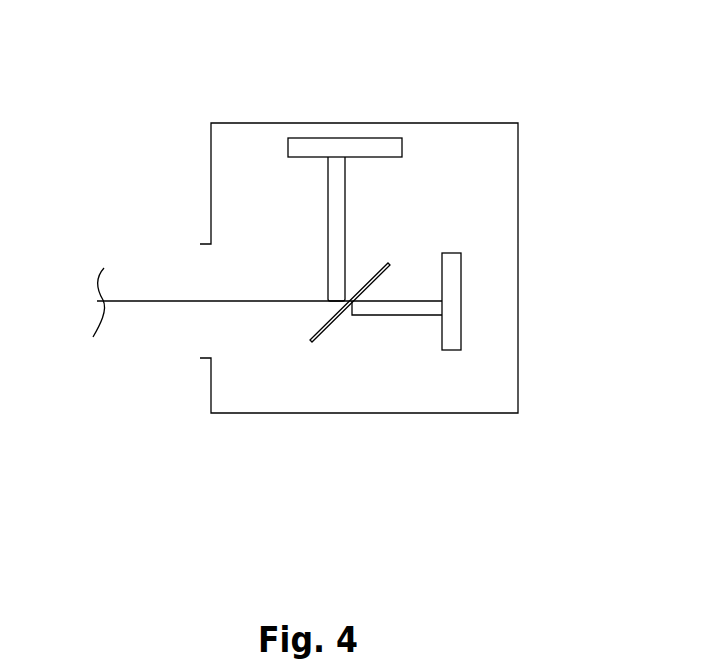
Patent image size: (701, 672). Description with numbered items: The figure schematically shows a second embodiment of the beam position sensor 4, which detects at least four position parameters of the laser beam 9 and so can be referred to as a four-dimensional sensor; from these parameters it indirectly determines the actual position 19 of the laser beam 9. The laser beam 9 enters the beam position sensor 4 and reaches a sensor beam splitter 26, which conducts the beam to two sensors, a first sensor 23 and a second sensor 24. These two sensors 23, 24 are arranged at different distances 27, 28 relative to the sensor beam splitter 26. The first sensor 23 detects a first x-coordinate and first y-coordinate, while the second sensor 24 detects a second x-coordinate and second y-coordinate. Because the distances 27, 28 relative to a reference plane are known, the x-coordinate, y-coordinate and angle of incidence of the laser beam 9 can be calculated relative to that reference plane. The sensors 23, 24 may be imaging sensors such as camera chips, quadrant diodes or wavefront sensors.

The beam position sensor 4 is at (115, 88).
The laser beam 9 is at (86, 318).
The actual position 19 is at (168, 302).
The first sensor 23 is at (448, 326).
The second sensor 24 is at (330, 150).
The sensor beam splitter 26 is at (310, 340).
The first distance 27 is at (328, 229).
The second distance 28 is at (397, 315).